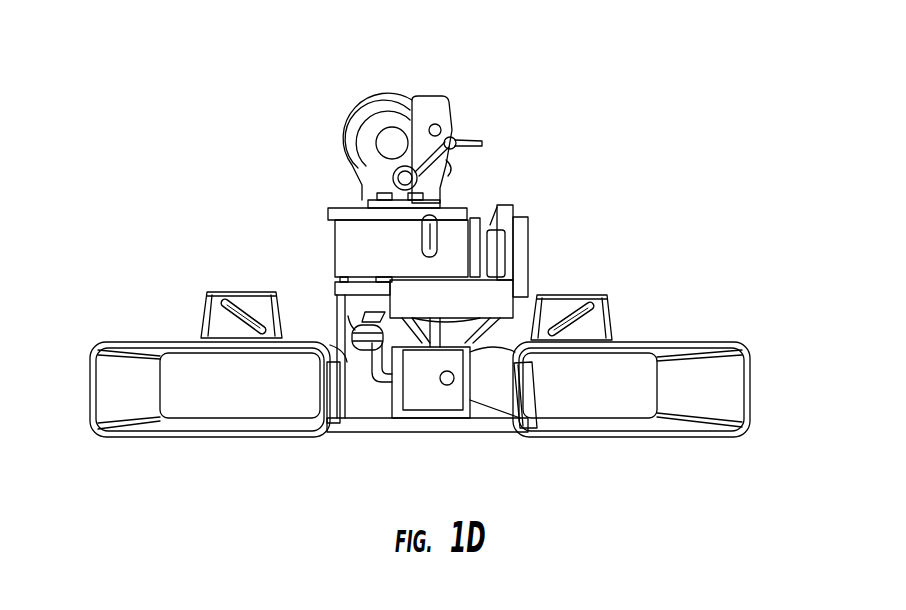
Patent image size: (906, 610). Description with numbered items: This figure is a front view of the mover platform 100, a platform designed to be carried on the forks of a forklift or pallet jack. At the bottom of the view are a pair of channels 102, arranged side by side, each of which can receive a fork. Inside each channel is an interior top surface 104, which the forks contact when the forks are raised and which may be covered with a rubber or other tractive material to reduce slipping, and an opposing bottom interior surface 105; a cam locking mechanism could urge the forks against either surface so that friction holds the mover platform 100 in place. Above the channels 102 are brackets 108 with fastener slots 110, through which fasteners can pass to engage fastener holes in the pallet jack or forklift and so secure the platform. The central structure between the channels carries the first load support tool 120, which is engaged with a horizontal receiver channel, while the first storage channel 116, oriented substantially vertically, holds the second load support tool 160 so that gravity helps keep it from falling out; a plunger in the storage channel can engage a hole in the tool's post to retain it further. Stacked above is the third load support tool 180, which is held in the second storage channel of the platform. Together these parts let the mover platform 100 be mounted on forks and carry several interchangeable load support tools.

The mover platform 100 is at (648, 181).
The channels 102 is at (90, 358).
The interior top surface 104 is at (196, 352).
The bottom interior surface 105 is at (217, 423).
The brackets 108 is at (242, 297).
The fastener slots 110 is at (225, 303).
The first storage channel 116 is at (348, 313).
The first load support tool 120 is at (349, 452).
The second load support tool 160 is at (514, 190).
The third load support tool 180 is at (464, 96).